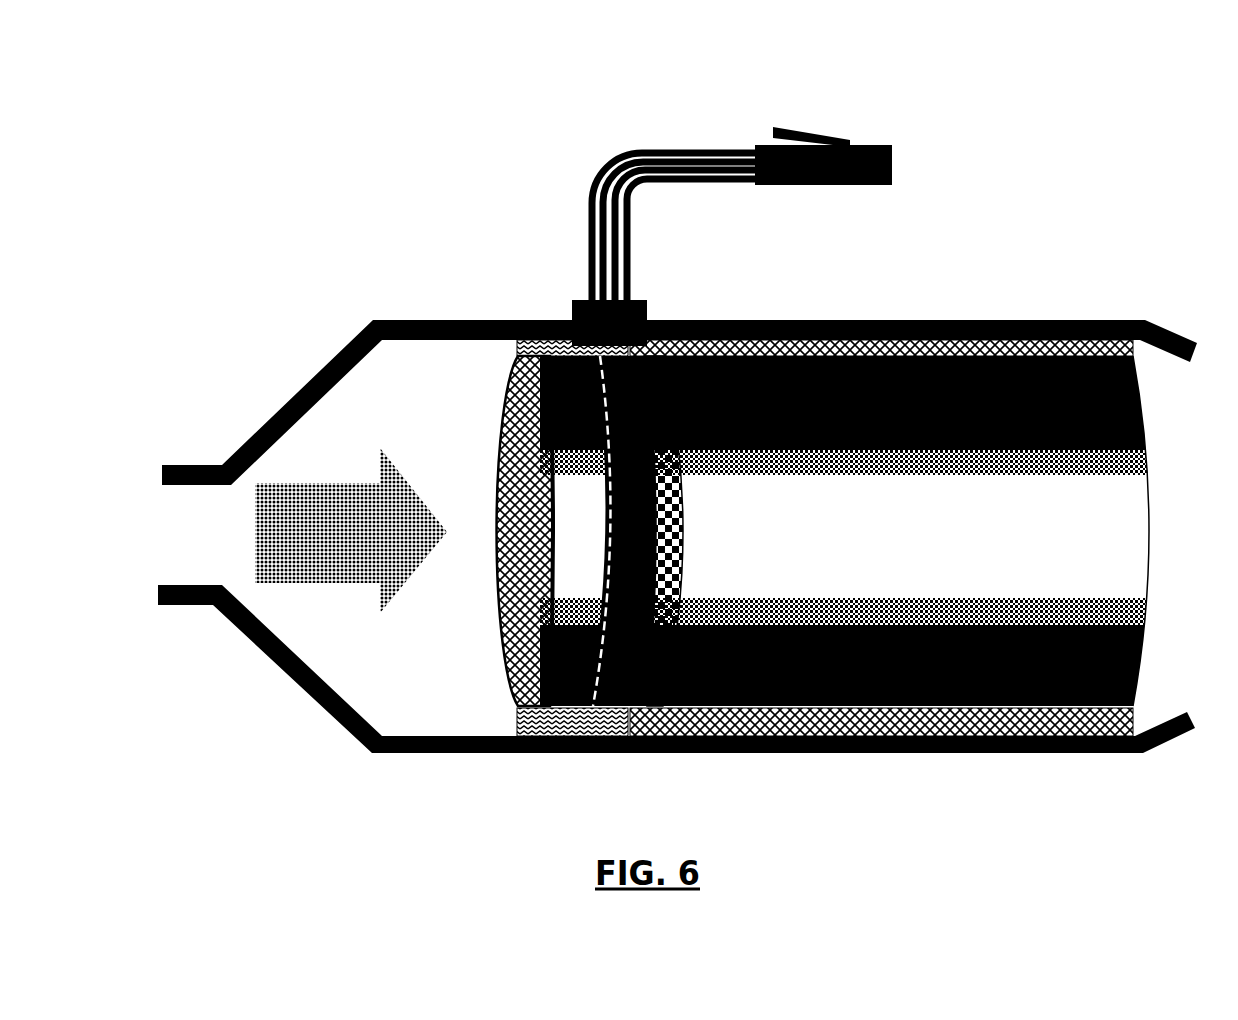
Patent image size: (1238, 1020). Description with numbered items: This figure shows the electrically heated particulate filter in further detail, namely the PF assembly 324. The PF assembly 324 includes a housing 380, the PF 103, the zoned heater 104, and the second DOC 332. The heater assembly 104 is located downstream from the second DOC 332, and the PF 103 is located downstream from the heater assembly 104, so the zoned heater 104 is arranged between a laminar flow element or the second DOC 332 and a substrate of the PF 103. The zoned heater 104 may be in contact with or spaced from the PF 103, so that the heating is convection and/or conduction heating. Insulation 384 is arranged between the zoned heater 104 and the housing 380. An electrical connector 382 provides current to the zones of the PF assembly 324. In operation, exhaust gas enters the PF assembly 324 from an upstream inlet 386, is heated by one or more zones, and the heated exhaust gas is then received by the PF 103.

The PF assembly 324 is at (620, 403).
The housing 380 is at (867, 322).
The zoned heater 104 is at (668, 320).
The insulation 384 is at (517, 350).
The PF 103 is at (788, 521).
The second DOC 332 is at (548, 320).
The electrical connector 382 is at (883, 150).
The upstream inlet 386 is at (167, 537).